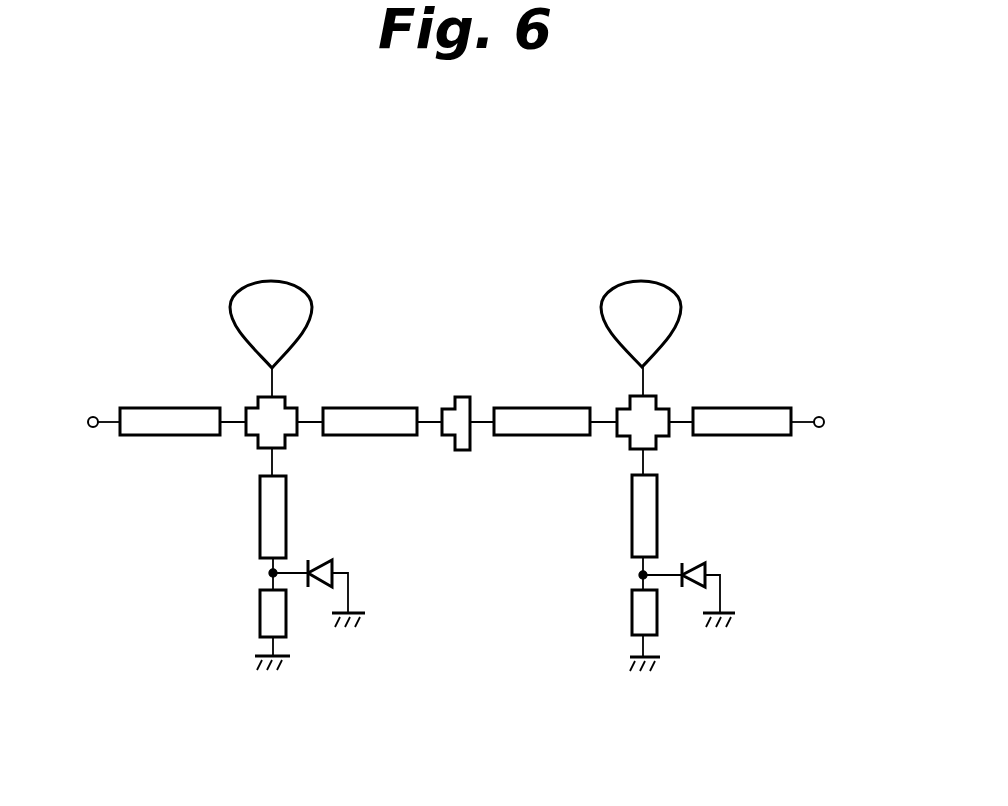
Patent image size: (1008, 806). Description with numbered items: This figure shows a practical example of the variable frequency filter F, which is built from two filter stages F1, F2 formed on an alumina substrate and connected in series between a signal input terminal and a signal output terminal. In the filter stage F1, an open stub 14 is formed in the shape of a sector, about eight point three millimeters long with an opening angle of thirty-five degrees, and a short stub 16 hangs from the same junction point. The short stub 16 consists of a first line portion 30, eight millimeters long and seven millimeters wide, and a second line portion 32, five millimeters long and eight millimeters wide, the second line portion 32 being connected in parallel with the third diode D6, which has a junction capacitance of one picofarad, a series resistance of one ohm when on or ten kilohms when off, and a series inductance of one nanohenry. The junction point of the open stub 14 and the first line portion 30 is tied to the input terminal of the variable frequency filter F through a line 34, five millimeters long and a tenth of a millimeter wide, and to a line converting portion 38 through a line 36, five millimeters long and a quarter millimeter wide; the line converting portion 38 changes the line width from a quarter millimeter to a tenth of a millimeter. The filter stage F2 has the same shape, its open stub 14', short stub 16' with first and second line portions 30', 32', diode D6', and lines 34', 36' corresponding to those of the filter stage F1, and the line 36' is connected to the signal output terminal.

The variable frequency filter F is at (441, 274).
The filter stage F1 is at (117, 697).
The filter stage F2 is at (800, 697).
The open stub 14 is at (292, 311).
The open stub 14' is at (655, 291).
The short stub 16 is at (296, 573).
The short stub 16' is at (657, 568).
The first line portion 30 is at (307, 517).
The first line portion 30' is at (687, 507).
The second line portion 32 is at (314, 633).
The second line portion 32' is at (691, 634).
The line 34 is at (170, 385).
The line 34' is at (542, 381).
The line 36 is at (370, 385).
The line 36' is at (742, 381).
The line converting portion 38 is at (453, 420).
The third diode D6 is at (336, 580).
The third diode D6' is at (699, 568).